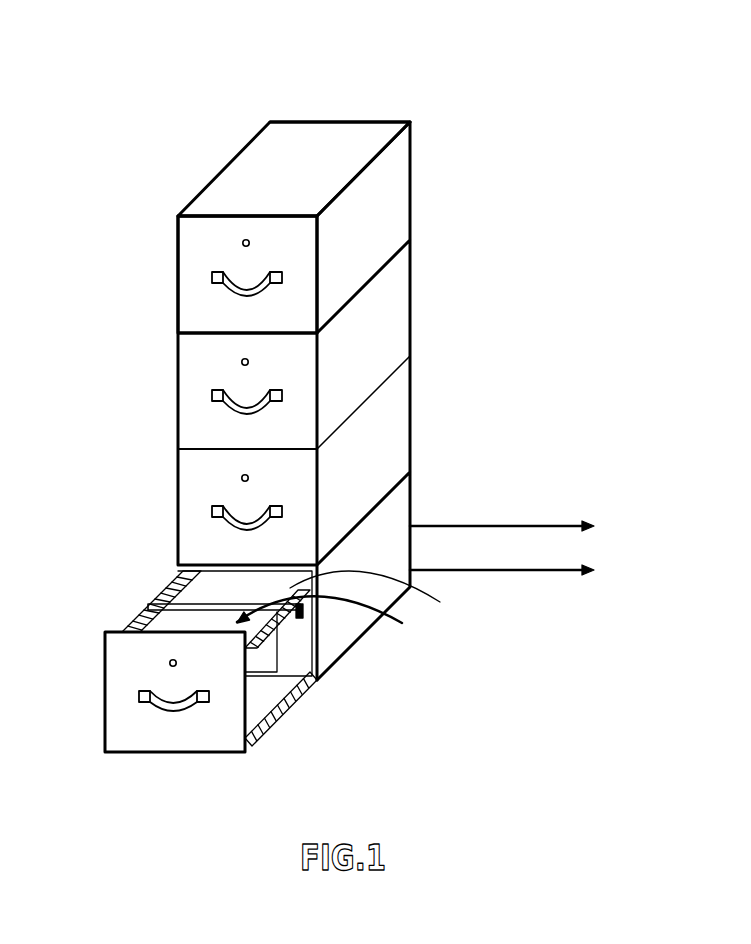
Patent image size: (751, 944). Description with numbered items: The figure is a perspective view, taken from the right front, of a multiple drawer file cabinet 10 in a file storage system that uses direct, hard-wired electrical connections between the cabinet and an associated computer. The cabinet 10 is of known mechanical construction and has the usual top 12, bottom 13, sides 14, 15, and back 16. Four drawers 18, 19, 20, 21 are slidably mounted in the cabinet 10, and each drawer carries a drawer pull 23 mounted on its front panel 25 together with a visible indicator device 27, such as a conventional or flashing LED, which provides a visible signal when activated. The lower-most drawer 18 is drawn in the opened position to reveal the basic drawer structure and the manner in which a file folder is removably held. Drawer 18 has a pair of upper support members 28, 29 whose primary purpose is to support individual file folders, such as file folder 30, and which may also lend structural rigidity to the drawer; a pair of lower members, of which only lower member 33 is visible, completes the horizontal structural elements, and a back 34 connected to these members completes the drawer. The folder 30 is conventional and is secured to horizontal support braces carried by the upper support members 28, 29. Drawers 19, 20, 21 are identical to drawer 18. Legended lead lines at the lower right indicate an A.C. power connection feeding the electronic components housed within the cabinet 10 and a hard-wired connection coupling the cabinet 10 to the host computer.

The multiple drawer file cabinet 10 is at (381, 428).
The top 12 is at (272, 192).
The bottom 13 is at (367, 636).
The side 14 is at (176, 317).
The side 15 is at (385, 202).
The back 16 is at (363, 117).
The drawer 18 is at (113, 642).
The drawer 19 is at (216, 537).
The drawer 20 is at (177, 371).
The drawer 21 is at (185, 253).
The drawer pull 23 is at (240, 286).
The front panel 25 is at (206, 236).
The visible indicator device 27 is at (244, 239).
The upper support member 28 is at (150, 604).
The upper support member 29 is at (258, 652).
The file folder 30 is at (336, 622).
The lower member 33 is at (297, 695).
The back 34 is at (385, 598).